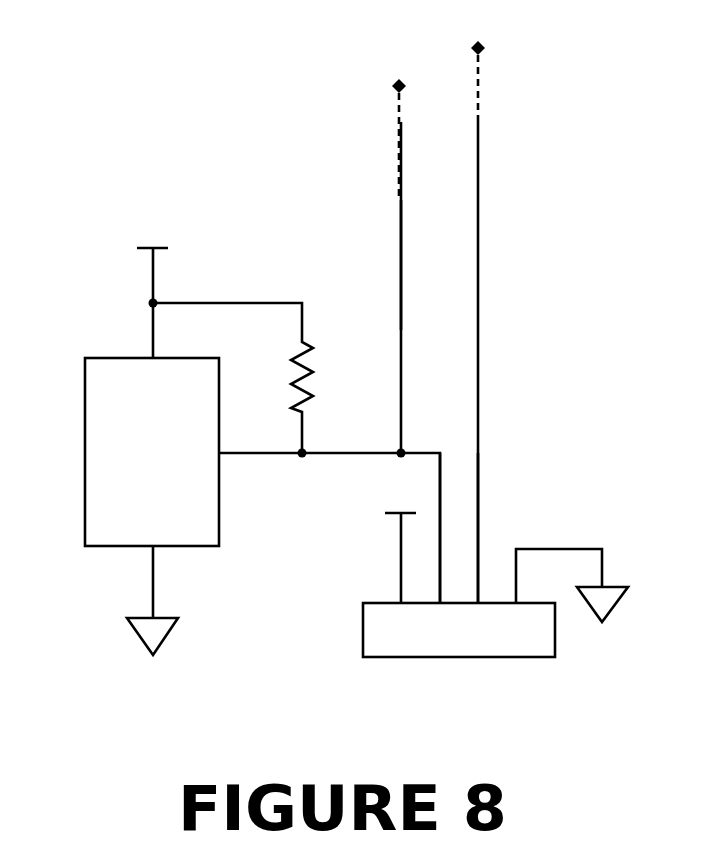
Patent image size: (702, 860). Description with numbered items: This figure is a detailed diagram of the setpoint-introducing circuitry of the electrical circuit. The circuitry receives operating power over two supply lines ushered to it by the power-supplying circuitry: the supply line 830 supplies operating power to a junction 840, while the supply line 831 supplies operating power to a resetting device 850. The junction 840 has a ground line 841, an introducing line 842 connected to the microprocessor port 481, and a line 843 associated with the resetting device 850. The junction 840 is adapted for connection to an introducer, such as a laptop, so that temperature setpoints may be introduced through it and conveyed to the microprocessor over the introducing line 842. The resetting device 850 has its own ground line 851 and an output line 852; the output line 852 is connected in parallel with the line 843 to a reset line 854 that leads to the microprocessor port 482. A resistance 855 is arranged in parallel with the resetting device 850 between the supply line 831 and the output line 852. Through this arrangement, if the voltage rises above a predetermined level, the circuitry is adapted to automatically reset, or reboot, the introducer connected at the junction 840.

The supply line 831 is at (153, 247).
The resetting device 850 is at (152, 452).
The resistance 855 is at (252, 378).
The output line 852 is at (252, 453).
The microprocessor port 482 is at (397, 254).
The reset line 854 is at (396, 222).
The microprocessor port 481 is at (479, 310).
The line 843 is at (430, 452).
The introducing line 842 is at (478, 451).
The supply line 830 is at (401, 512).
The junction 840 is at (459, 630).
The ground line 841 is at (583, 549).
The ground line 851 is at (150, 580).